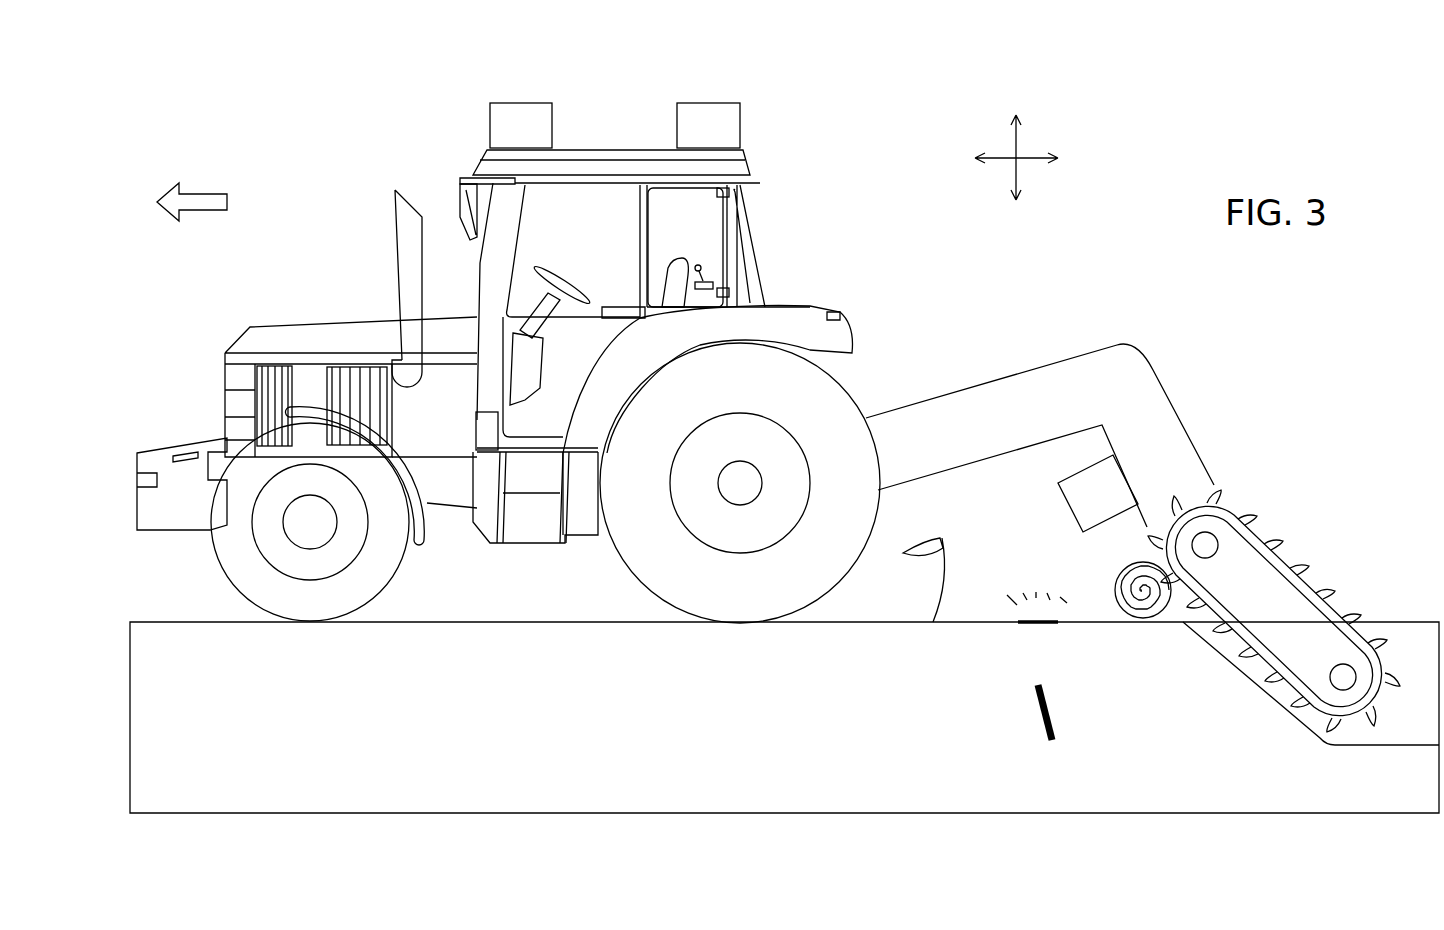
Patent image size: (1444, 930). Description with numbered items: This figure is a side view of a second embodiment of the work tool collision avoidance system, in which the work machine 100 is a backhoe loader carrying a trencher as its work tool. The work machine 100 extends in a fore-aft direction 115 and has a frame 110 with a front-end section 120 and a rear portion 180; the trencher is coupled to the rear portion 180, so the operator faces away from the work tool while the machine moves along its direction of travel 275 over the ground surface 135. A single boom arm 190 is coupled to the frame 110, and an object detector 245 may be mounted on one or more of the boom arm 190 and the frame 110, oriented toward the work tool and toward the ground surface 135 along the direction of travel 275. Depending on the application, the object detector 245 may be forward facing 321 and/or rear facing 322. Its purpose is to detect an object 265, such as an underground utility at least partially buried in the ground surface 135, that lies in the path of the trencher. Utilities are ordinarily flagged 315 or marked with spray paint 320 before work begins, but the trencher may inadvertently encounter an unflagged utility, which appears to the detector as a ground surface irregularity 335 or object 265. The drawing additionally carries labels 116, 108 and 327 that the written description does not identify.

The work machine 100 is at (297, 108).
The frame 110 is at (457, 493).
The fore-aft direction 115 is at (1035, 160).
The front-end section 120 is at (703, 262).
The ground surface 135 is at (836, 756).
The rear portion 180 is at (864, 279).
The boom arm 190 is at (887, 440).
The object detector 245 is at (543, 138).
The object 265 is at (1045, 712).
The direction of travel 275 is at (207, 203).
The utility flag 315 is at (937, 548).
The spray paint 320 is at (1015, 578).
The forward facing 321 is at (1063, 158).
The rear facing 322 is at (973, 158).
The trench 327 is at (1426, 653).
The ground surface irregularity 335 is at (1043, 745).
The digging chain 116 is at (1267, 590).
The trencher 108 is at (1257, 611).